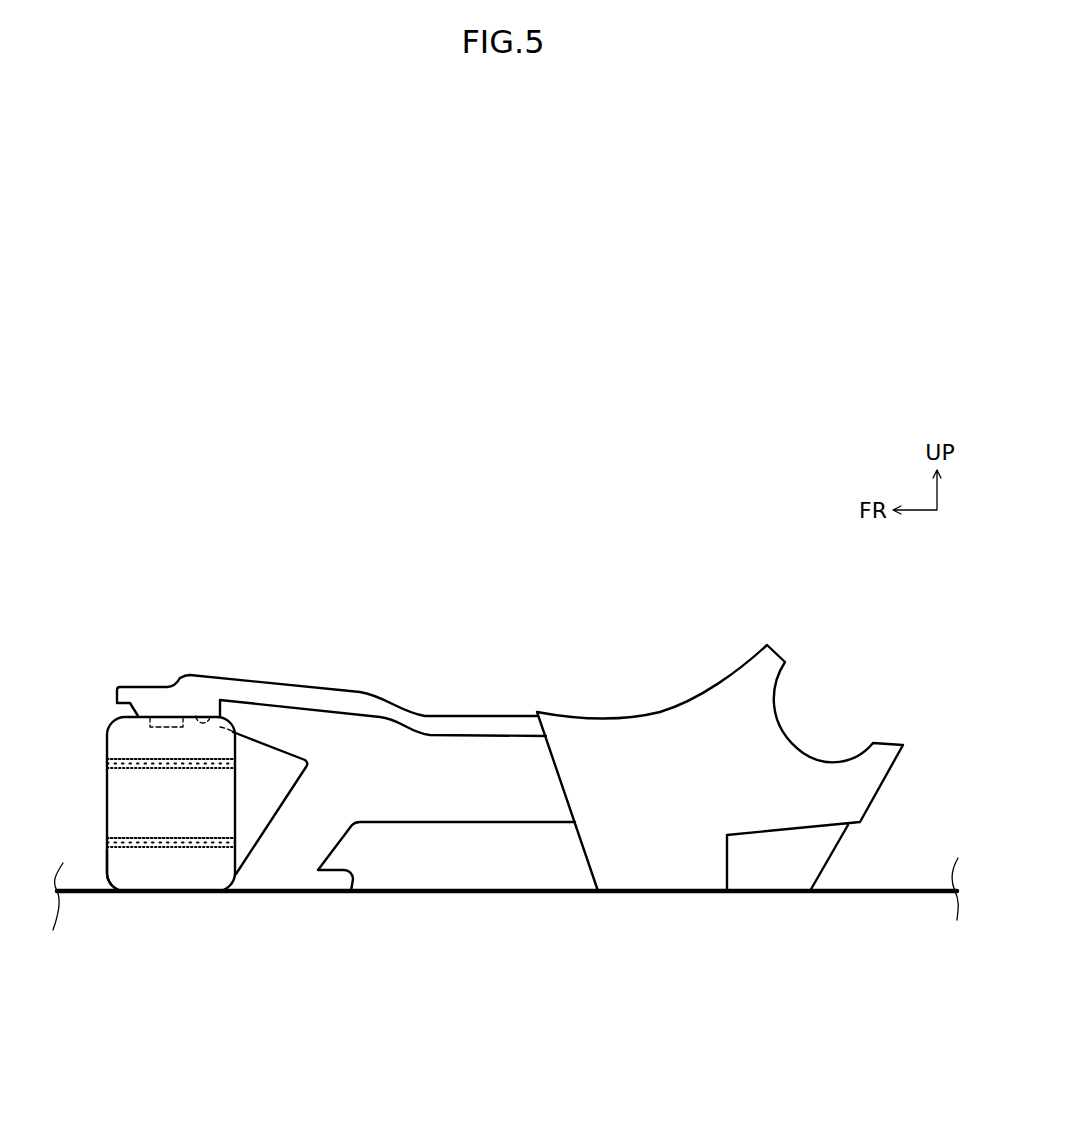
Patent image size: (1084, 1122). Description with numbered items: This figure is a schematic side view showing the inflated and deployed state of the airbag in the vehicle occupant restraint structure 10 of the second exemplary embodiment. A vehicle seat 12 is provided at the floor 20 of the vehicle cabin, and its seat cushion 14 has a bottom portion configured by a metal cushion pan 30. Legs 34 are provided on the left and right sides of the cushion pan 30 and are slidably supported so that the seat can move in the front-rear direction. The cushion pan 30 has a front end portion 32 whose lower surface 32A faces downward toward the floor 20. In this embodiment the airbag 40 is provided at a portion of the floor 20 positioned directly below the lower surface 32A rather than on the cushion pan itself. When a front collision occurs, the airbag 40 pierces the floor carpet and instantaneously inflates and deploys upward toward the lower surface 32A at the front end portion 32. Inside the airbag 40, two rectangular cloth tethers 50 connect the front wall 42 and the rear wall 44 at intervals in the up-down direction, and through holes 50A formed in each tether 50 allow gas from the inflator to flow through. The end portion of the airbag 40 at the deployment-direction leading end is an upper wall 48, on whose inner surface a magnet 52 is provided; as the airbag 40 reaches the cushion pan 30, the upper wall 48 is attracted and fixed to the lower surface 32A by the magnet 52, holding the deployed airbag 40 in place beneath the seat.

The vehicle occupant restraint structure 10 is at (113, 913).
The vehicle seat 12 is at (598, 658).
The seat cushion 14 is at (352, 672).
The floor 20 is at (880, 891).
The cushion pan 30 is at (294, 676).
The front end portion 32 is at (133, 676).
The lower surface 32A is at (213, 716).
The leg 34 is at (480, 758).
The airbag 40 is at (107, 719).
The front wall 42 is at (105, 866).
The rear wall 44 is at (237, 797).
The upper wall 48 is at (158, 716).
The tether 50 is at (177, 849).
The through hole 50A is at (156, 767).
The magnet 52 is at (150, 728).